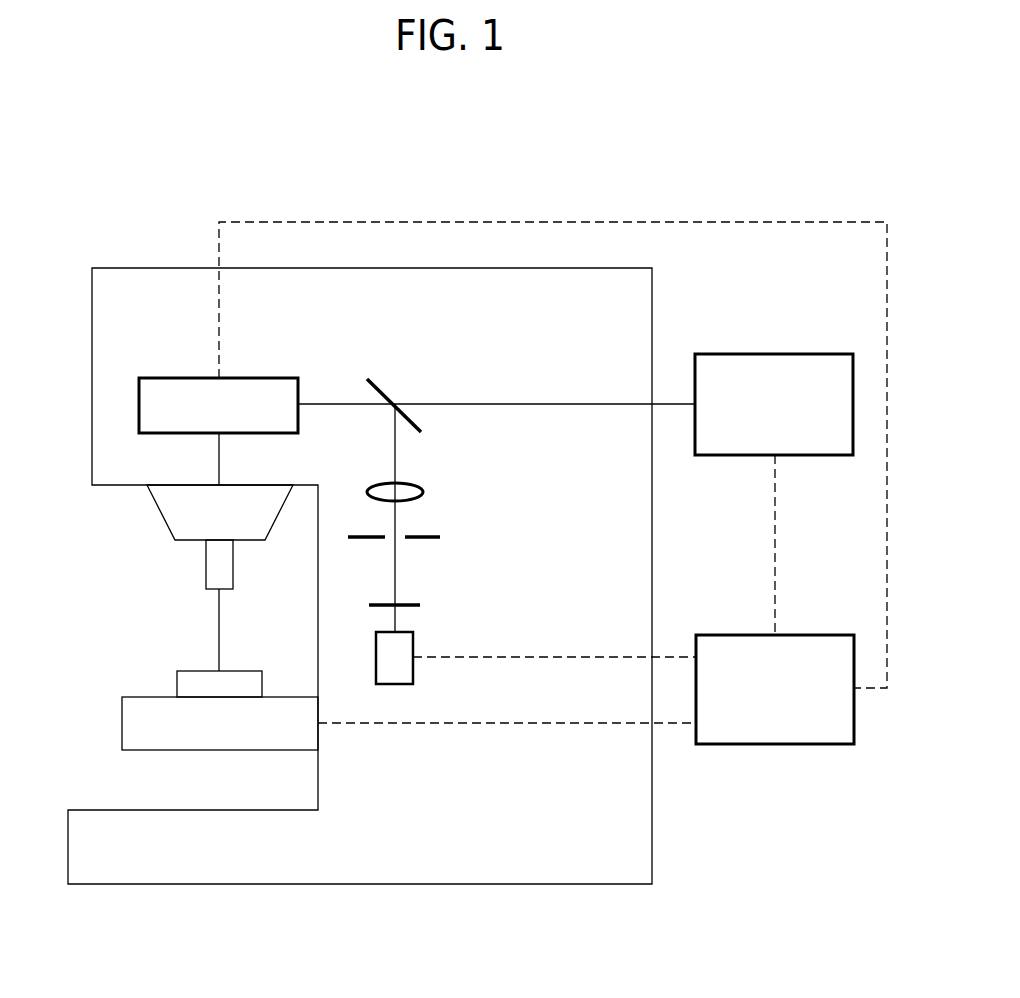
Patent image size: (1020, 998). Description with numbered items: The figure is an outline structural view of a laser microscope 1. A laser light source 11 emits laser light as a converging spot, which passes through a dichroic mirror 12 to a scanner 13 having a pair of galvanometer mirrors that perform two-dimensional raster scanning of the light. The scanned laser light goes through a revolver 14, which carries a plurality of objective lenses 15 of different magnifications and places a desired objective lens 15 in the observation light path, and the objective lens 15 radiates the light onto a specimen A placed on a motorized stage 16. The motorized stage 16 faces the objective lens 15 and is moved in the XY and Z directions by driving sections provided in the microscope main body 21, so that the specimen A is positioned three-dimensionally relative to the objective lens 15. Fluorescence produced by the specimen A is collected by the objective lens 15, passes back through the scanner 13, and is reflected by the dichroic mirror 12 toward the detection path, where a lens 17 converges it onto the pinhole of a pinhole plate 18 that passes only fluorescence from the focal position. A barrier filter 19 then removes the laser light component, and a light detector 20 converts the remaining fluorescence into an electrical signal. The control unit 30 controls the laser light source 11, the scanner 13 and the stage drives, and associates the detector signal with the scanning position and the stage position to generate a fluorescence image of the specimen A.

The laser microscope 1 is at (652, 199).
The laser light source 11 is at (775, 354).
The dichroic mirror 12 is at (381, 378).
The scanner 13 is at (174, 378).
The revolver 14 is at (158, 512).
The objective lens 15 is at (206, 565).
The motorized stage 16 is at (122, 715).
The lens 17 is at (424, 492).
The pinhole plate 18 is at (440, 532).
The barrier filter 19 is at (420, 604).
The light detector 20 is at (413, 672).
The microscope main body 21 is at (365, 884).
The control unit 30 is at (775, 744).
The specimen A is at (177, 673).